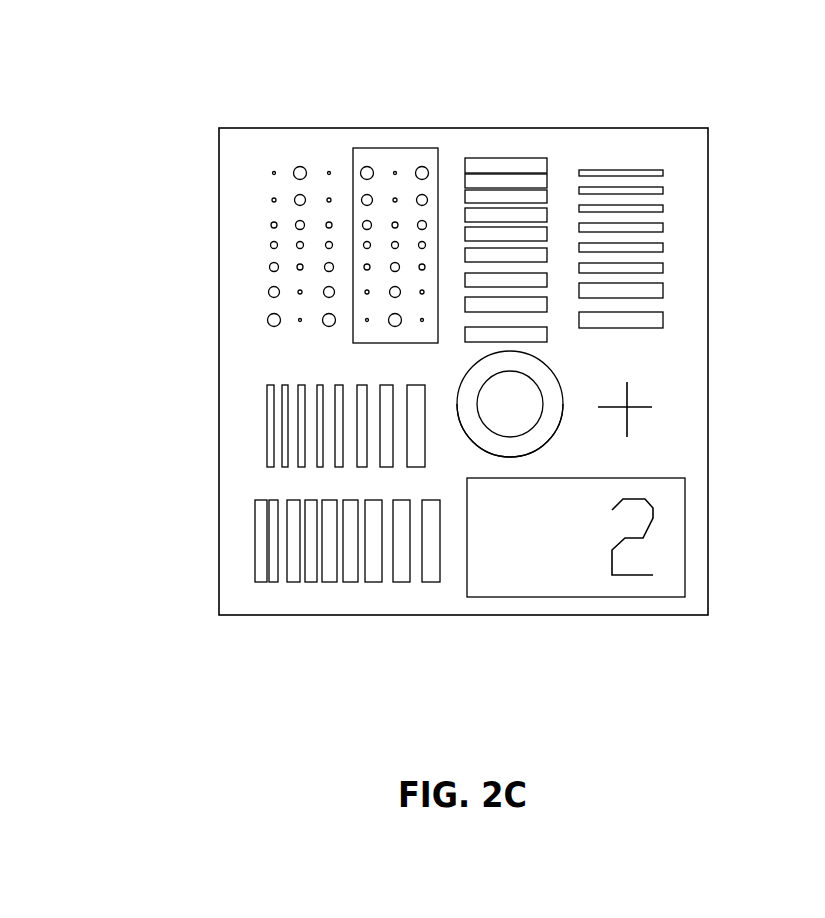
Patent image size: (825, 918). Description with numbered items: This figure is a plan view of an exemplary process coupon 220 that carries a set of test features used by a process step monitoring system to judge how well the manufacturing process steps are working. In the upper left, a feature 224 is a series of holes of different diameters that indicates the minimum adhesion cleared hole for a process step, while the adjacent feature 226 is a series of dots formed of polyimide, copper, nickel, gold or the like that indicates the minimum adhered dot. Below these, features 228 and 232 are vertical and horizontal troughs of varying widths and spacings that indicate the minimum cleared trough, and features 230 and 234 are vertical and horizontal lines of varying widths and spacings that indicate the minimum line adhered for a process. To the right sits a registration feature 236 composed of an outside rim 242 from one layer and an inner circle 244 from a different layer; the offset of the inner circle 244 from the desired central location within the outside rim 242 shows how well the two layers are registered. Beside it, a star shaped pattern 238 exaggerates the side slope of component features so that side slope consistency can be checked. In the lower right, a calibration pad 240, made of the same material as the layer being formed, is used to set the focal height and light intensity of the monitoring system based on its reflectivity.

The process coupon 220 is at (136, 86).
The feature (series of holes) 224 is at (270, 188).
The feature (series of dots) 226 is at (390, 237).
The feature (vertical troughs) 228 is at (275, 422).
The feature (vertical lines) 230 is at (268, 535).
The feature (horizontal troughs) 232 is at (625, 172).
The feature (horizontal lines) 234 is at (497, 143).
The registration feature 236 is at (533, 400).
The star shaped pattern 238 is at (660, 405).
The calibration pad 240 is at (537, 550).
The outside rim 242 is at (528, 461).
The inner circle 244 is at (482, 418).